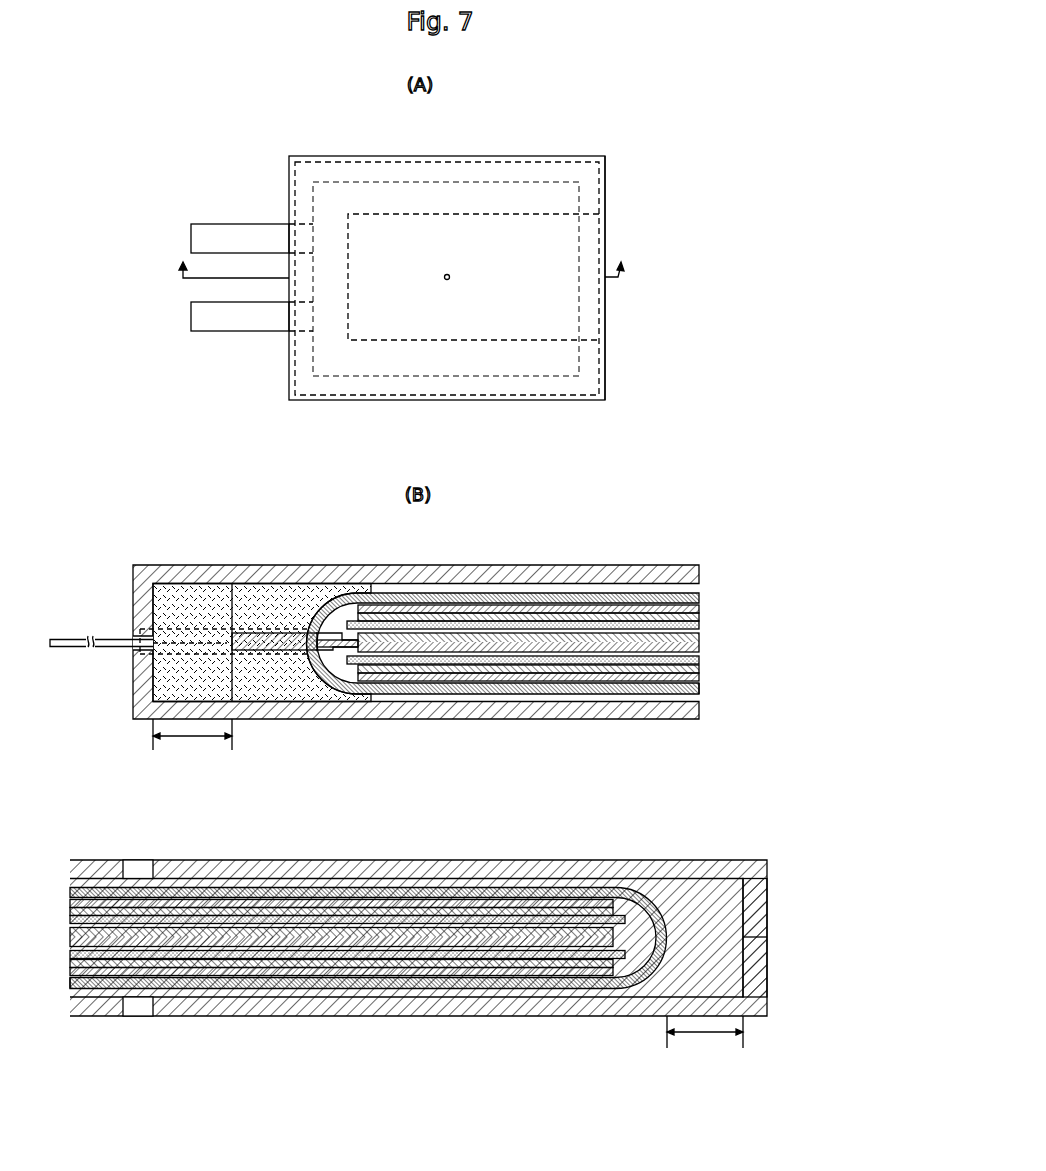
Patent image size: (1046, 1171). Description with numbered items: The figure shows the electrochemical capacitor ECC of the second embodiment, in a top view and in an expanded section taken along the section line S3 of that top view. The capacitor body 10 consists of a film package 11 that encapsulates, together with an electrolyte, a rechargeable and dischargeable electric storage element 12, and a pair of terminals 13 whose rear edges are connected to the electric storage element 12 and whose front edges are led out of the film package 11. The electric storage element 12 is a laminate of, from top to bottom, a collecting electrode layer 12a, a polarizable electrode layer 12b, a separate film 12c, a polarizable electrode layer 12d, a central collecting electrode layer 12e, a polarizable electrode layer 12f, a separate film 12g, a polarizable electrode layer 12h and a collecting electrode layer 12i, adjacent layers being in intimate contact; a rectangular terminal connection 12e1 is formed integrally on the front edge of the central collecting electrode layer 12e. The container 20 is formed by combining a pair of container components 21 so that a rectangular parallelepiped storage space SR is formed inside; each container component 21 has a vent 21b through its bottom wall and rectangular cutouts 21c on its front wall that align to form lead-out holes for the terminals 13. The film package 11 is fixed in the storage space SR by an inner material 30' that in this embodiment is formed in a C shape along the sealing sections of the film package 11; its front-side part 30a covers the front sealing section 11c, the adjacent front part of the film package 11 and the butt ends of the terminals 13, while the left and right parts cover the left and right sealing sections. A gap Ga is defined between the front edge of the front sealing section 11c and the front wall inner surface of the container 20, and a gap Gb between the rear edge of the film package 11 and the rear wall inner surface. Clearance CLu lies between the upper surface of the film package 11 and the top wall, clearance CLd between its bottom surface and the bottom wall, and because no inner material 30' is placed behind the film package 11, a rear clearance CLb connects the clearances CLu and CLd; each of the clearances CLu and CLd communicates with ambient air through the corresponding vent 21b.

The capacitor body 10 is at (384, 240).
The film package 11 is at (302, 585).
The front sealing section 11c is at (273, 630).
The electric storage element 12 is at (418, 753).
The collecting electrode layer 12a is at (699, 598).
The polarizable electrode layer 12b is at (699, 609).
The separate film 12c is at (699, 617).
The polarizable electrode layer 12d is at (699, 625).
The collecting electrode layer 12e is at (70, 935).
The terminal connection 12e1 is at (340, 694).
The polarizable electrode layer 12f is at (699, 660).
The separate film 12g is at (699, 669).
The polarizable electrode layer 12h is at (699, 677).
The collecting electrode layer 12i is at (699, 688).
The terminal 13 is at (233, 237).
The container 20 is at (490, 157).
The container component 21 is at (602, 193).
The vent 21b is at (447, 280).
The rectangular cutout 21c is at (128, 627).
The inner material 30' is at (376, 404).
The filler resin portion 30a is at (376, 404).
The electrochemical capacitor ECC is at (303, 158).
The storage space SR is at (577, 165).
The clearance CLu is at (605, 592).
The clearance CLd is at (605, 703).
The clearance CLb is at (590, 252).
The section line S3 is at (403, 275).
The gap Ga is at (192, 739).
The gap Gb is at (705, 1037).